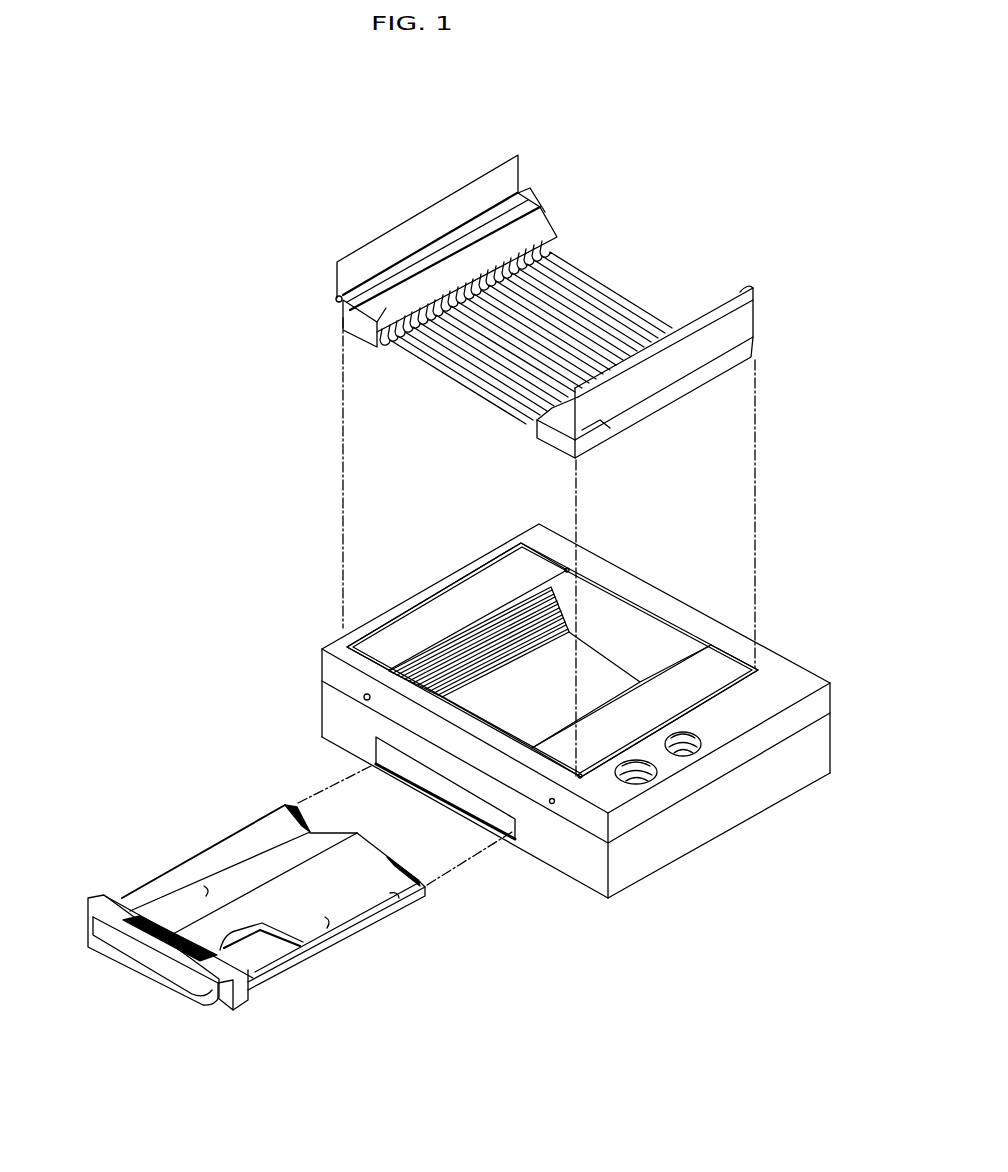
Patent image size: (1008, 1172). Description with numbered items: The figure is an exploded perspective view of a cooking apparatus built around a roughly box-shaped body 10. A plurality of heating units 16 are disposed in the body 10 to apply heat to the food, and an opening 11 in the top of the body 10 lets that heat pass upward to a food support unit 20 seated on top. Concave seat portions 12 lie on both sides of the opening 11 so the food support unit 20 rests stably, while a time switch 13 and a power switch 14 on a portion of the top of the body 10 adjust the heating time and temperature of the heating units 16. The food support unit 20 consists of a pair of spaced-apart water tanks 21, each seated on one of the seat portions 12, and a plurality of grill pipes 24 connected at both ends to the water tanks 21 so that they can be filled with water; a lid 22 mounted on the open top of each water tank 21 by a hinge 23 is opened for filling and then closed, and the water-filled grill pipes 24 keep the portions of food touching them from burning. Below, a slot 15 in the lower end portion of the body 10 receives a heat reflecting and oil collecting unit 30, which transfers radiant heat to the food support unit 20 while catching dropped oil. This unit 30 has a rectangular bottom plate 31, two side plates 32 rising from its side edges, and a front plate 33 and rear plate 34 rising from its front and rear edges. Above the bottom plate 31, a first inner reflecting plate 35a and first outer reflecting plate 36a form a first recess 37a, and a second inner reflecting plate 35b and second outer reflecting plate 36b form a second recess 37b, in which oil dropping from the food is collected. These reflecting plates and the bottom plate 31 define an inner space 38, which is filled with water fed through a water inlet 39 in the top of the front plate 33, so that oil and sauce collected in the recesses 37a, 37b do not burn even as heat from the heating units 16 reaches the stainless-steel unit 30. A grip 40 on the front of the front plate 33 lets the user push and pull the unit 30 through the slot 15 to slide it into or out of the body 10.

The body 10 is at (780, 638).
The opening 11 is at (657, 615).
The concave seat portions 12 is at (436, 603).
The time switch 13 is at (657, 773).
The power switch 14 is at (703, 744).
The slot 15 is at (512, 826).
The heating units 16 is at (439, 665).
The food support unit 20 is at (627, 275).
The water tanks 21 is at (352, 325).
The lid 22 is at (477, 178).
The hinge 23 is at (335, 300).
The grill pipes 24 is at (457, 393).
The heat reflecting and oil collecting unit 30 is at (245, 1015).
The bottom plate 31 is at (273, 989).
The side plates 32 is at (326, 953).
The front plate 33 is at (224, 1001).
The rear plate 34 is at (314, 830).
The first inner reflecting plate 35a is at (265, 867).
The second inner reflecting plate 35b is at (335, 890).
The first outer reflecting plate 36a is at (148, 903).
The second outer reflecting plate 36b is at (400, 897).
The first recess 37a is at (208, 888).
The second recess 37b is at (330, 925).
The inner space 38 is at (295, 945).
The water inlet 39 is at (105, 896).
The grip 40 is at (142, 976).